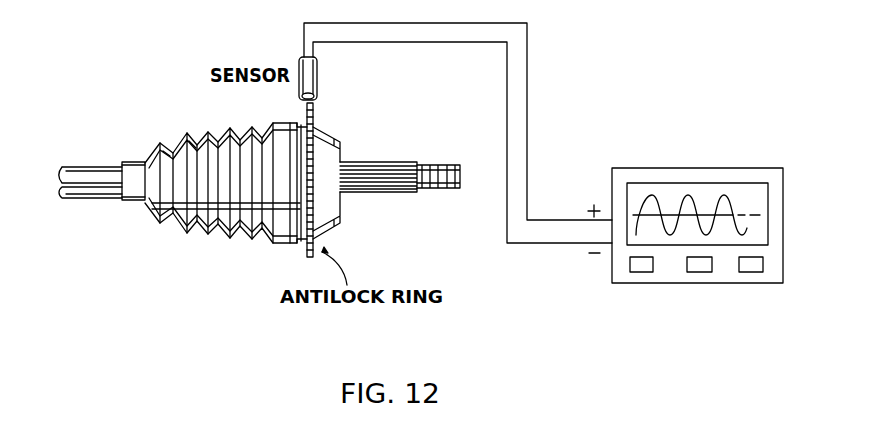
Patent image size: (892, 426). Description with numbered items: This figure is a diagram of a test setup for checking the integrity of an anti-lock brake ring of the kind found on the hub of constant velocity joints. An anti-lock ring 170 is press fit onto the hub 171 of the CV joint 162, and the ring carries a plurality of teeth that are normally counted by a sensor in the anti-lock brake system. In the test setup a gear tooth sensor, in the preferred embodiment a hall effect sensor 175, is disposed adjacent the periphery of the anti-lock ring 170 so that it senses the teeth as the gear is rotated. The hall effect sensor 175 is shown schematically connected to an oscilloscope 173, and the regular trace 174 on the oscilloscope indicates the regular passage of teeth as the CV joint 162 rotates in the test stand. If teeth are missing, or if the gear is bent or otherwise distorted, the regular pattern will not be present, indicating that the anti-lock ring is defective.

The CV joint 162 is at (291, 241).
The anti-lock ring 170 is at (315, 104).
The hub 171 is at (340, 217).
The oscilloscope 173 is at (641, 168).
The regular trace 174 is at (730, 202).
The hall effect sensor 175 is at (318, 80).